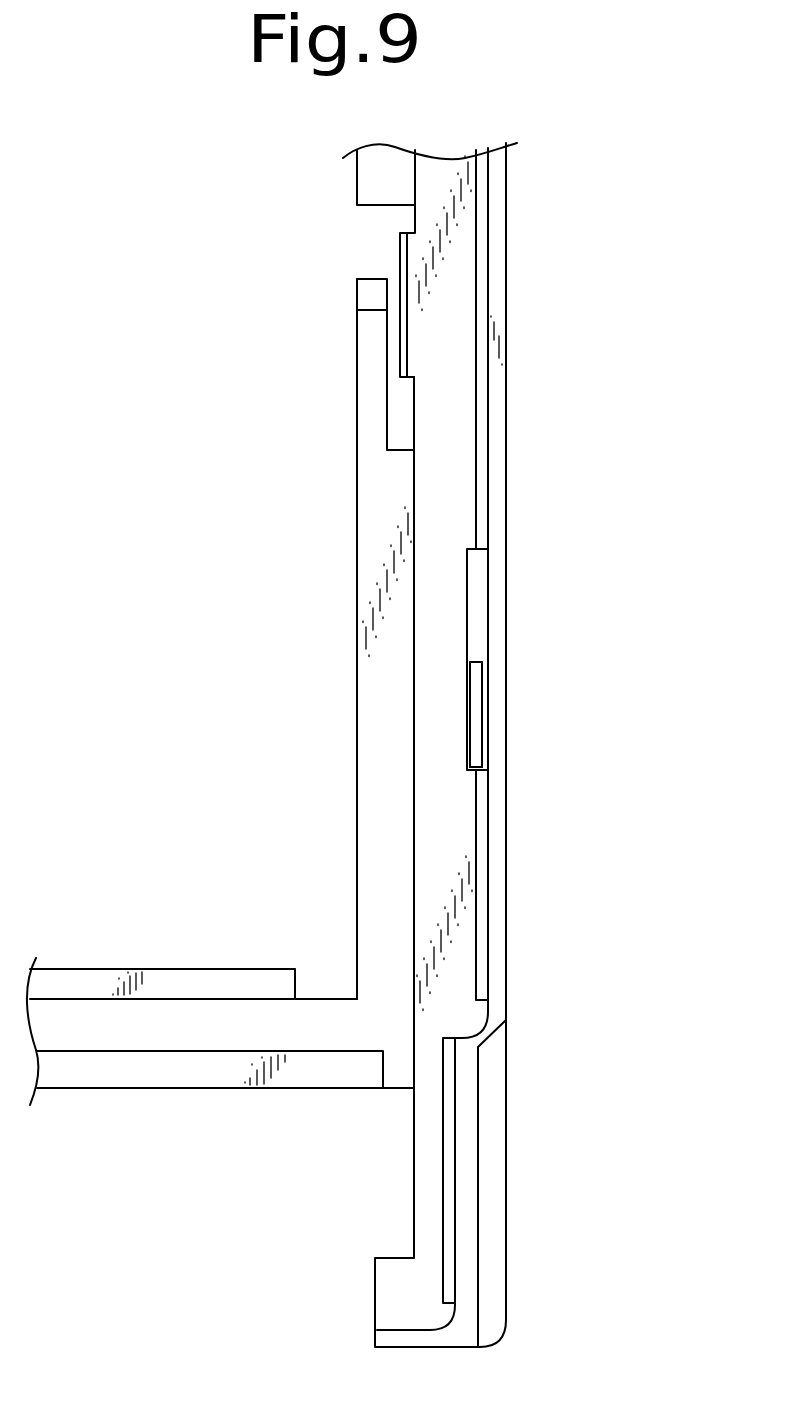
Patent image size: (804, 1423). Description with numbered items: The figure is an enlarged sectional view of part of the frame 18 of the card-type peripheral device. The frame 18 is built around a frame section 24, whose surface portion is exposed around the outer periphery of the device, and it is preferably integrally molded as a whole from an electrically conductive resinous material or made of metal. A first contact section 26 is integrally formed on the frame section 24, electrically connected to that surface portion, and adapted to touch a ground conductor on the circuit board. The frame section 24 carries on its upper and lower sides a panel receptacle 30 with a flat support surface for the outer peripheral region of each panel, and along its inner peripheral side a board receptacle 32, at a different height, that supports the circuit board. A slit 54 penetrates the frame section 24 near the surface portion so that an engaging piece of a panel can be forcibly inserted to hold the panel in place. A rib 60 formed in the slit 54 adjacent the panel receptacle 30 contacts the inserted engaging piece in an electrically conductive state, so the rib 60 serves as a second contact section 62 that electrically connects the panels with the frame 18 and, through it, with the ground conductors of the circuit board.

The frame 18 is at (527, 314).
The frame section 24 is at (506, 382).
The first contact section 26 is at (349, 366).
The panel receptacle 30 is at (432, 828).
The board receptacle 32 is at (385, 705).
The slit 54 is at (482, 607).
The rib 60 is at (478, 737).
The second contact section 62 is at (481, 697).